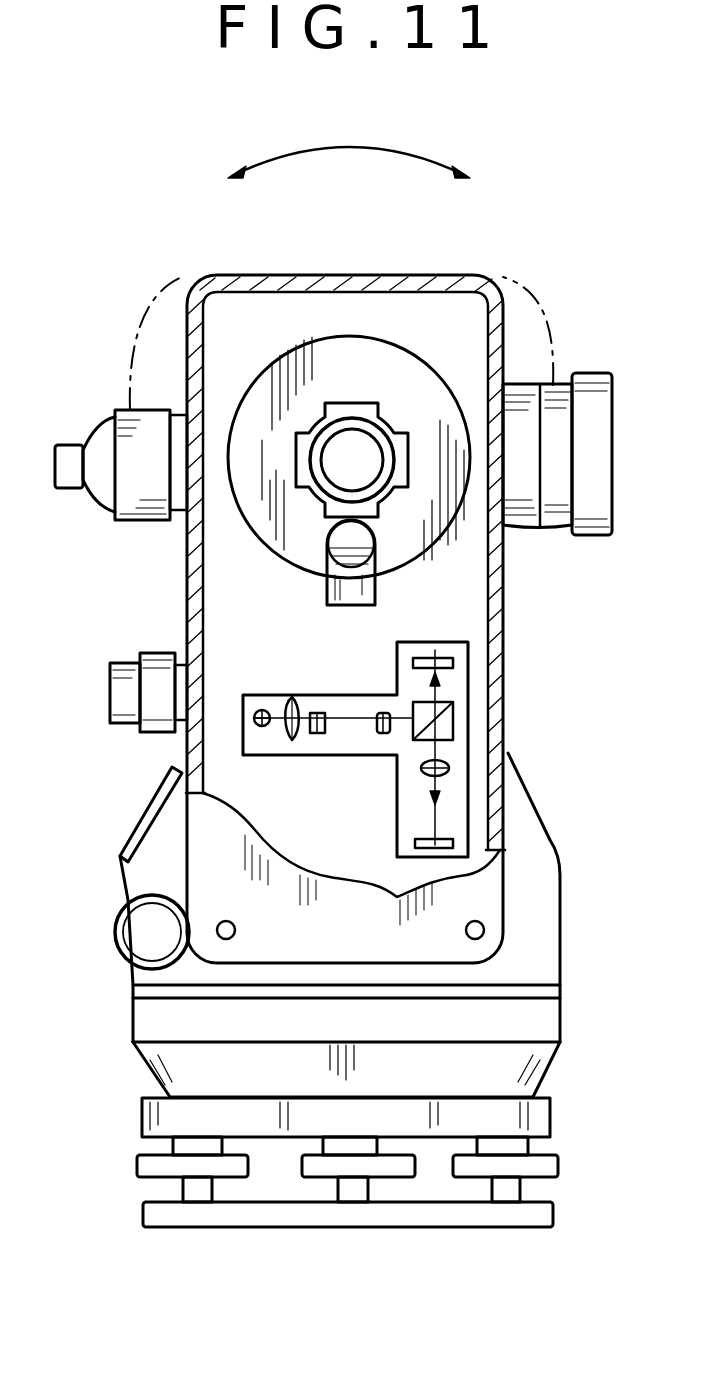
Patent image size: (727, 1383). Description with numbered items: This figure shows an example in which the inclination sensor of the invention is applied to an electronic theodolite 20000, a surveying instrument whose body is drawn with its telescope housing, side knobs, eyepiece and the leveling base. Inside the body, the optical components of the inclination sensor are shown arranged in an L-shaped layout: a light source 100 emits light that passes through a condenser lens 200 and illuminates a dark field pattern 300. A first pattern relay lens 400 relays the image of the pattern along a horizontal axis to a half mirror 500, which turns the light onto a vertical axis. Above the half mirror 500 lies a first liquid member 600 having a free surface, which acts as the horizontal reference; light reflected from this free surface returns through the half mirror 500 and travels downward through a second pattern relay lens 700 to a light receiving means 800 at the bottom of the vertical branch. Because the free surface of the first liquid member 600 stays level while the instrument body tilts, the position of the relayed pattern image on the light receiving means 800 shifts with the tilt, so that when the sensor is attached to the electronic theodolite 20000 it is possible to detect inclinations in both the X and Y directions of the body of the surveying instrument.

The light source 100 is at (262, 715).
The condenser lens 200 is at (292, 742).
The dark field pattern 300 is at (318, 710).
The first pattern relay lens 400 is at (382, 740).
The half mirror 500 is at (453, 716).
The first liquid member 600 is at (455, 660).
The second pattern relay lens 700 is at (448, 768).
The light receiving means 800 is at (455, 842).
The electronic theodolite 20000 is at (597, 1314).